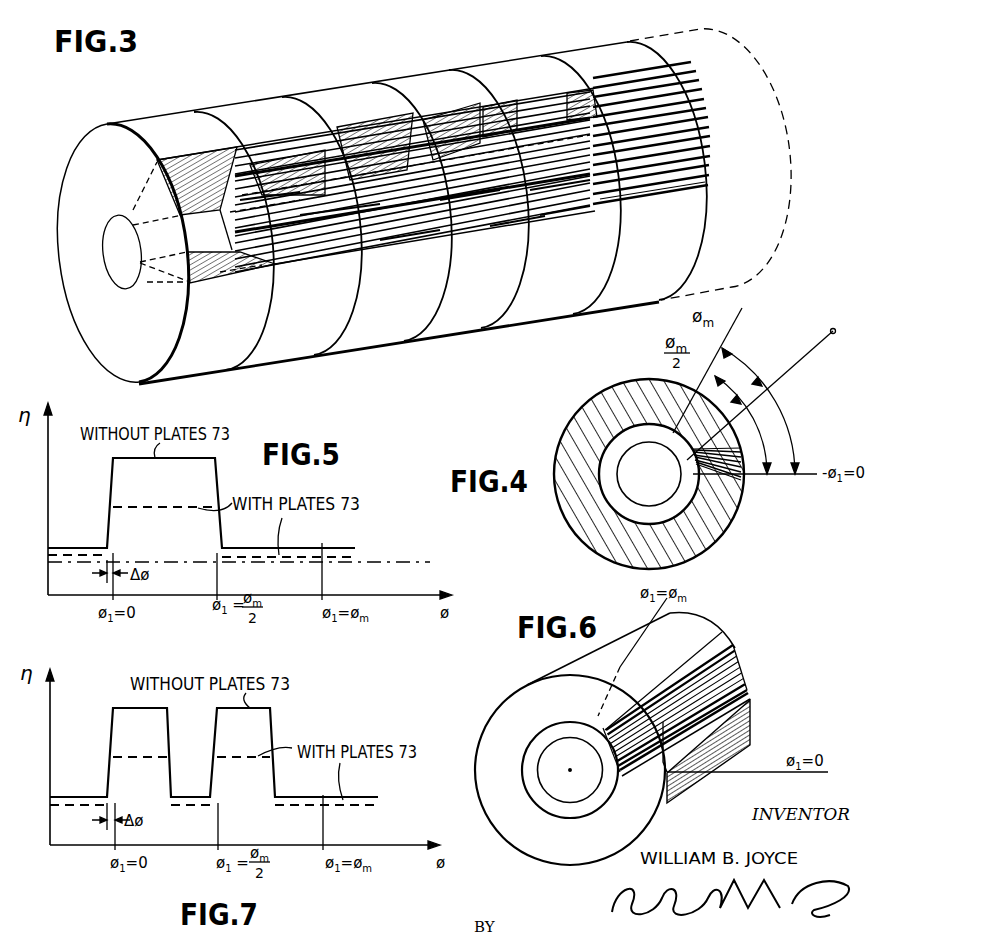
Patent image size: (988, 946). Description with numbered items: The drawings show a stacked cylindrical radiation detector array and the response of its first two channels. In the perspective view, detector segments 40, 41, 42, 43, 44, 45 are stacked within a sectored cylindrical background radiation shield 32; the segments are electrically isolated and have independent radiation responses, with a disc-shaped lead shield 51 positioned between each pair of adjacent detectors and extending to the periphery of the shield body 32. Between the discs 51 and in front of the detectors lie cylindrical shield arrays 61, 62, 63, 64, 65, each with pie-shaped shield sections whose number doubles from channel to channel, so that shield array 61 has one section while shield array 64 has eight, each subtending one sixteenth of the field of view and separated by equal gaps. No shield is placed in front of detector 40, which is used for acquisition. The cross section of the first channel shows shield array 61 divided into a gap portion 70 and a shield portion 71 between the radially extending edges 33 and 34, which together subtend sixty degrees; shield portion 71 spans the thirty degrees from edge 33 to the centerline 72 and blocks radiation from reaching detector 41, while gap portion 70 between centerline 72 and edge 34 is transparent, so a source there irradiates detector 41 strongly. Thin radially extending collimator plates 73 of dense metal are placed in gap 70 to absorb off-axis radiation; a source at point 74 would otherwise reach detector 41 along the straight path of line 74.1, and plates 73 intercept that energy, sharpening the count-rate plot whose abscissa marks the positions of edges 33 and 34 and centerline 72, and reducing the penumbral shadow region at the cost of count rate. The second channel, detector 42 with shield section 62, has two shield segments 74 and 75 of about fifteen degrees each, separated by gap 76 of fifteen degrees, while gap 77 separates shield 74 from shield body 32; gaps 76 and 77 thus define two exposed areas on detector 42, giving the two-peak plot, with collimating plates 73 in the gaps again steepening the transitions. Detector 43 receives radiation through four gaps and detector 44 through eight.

In FIG. 3, the sectored cylindrical background radiation shield 32 is at (80, 160).
In FIG. 6, the sectored cylindrical background radiation shield 32 is at (493, 739).
In FIG. 3, the detector segment 40 is at (108, 242).
In FIG. 3, the detector segment 41 is at (242, 195).
In FIG. 4, the detector segment 41 is at (660, 493).
In FIG. 3, the disc-shaped lead shields 51 is at (262, 247).
In FIG. 3, the shield array 61 is at (337, 258).
In FIG. 4, the shield array 61 is at (758, 460).
In FIG. 3, the detector segment 42 is at (378, 212).
In FIG. 6, the detector segment 42 is at (556, 752).
In FIG. 3, the shield section 62 is at (420, 232).
In FIG. 3, the detector segment 43 is at (486, 238).
In FIG. 3, the shield array 63 is at (515, 225).
In FIG. 6, the shield array 63 is at (760, 658).
In FIG. 3, the detector segment 44 is at (568, 225).
In FIG. 3, the shield array 64 is at (588, 212).
In FIG. 3, the detector segment 45 is at (645, 210).
In FIG. 3, the shield array 65 is at (678, 205).
In FIG. 4, the edge 33 is at (733, 348).
In FIG. 4, the collimator plates 73 is at (752, 440).
In FIG. 4, the edge 34 is at (817, 474).
In FIG. 4, the point / shield segment 74 is at (831, 331).
In FIG. 6, the point / shield segment 74 is at (746, 665).
In FIG. 4, the line 74.1 is at (778, 374).
In FIG. 4, the centerline 72 is at (750, 410).
In FIG. 4, the shield portion 71 is at (737, 397).
In FIG. 4, the gap portion 70 is at (743, 472).
In FIG. 6, the shield segment 75 is at (717, 637).
In FIG. 6, the gap 76 is at (736, 652).
In FIG. 6, the gap 77 is at (750, 685).